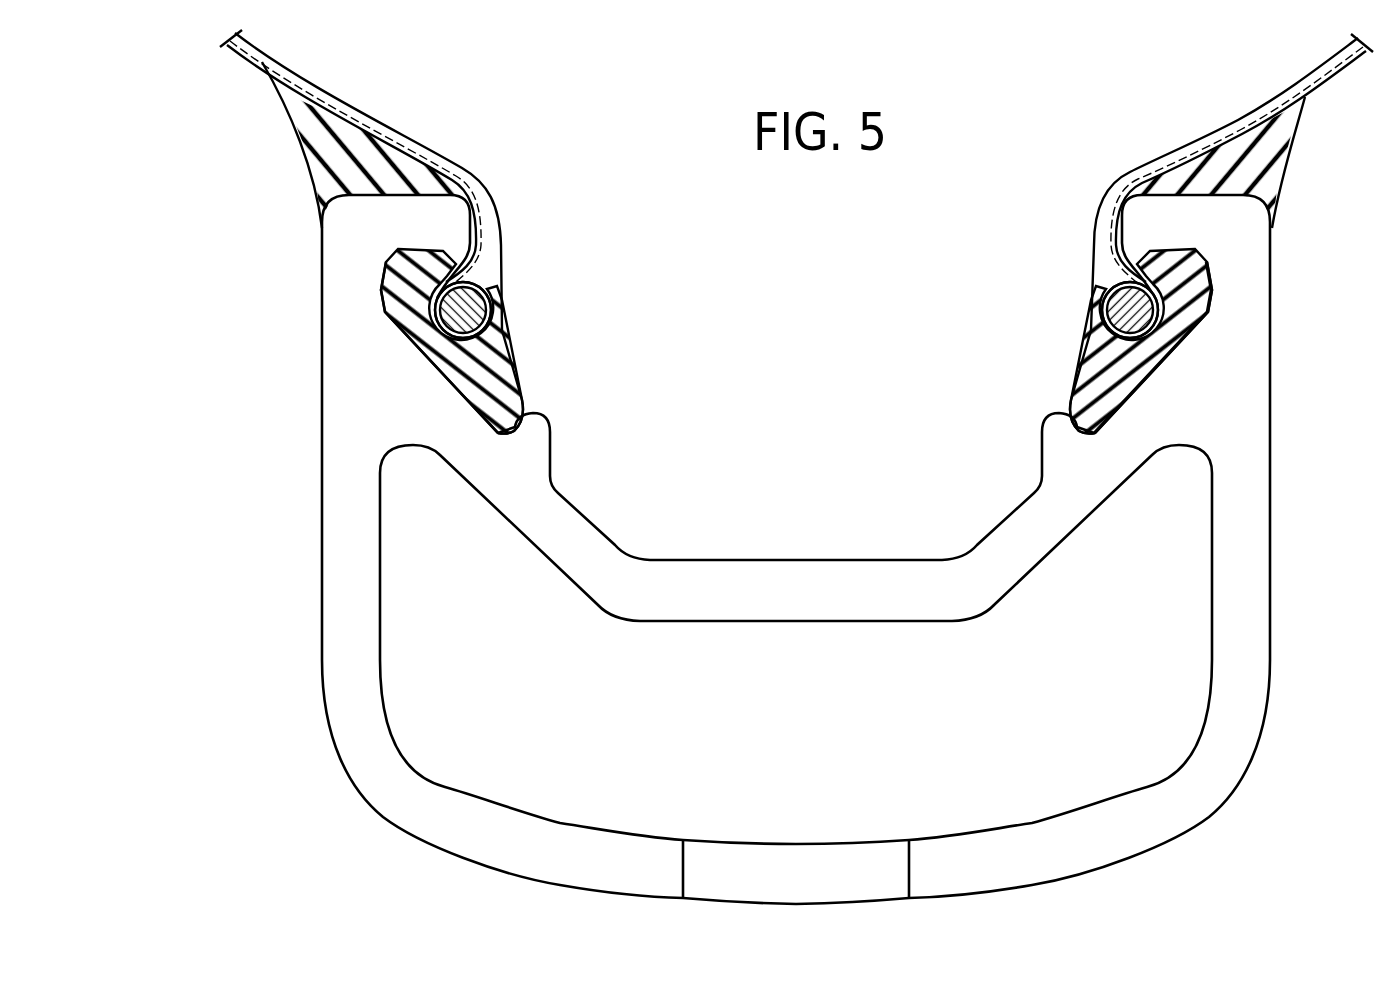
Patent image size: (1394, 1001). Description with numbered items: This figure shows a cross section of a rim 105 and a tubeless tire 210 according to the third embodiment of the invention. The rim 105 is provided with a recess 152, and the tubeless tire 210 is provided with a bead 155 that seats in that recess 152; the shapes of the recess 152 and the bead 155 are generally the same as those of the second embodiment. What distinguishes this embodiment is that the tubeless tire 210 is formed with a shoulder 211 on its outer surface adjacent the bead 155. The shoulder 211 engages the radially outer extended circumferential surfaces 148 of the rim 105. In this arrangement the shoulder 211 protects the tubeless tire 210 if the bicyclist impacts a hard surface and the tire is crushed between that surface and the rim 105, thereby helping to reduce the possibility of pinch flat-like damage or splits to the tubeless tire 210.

The rim 105 is at (265, 481).
The radially outer extended circumferential surface 148 is at (355, 183).
The recess 152 is at (1168, 355).
The bead 155 is at (1100, 372).
The tubeless tire 210 is at (1170, 234).
The shoulder 211 is at (1273, 192).